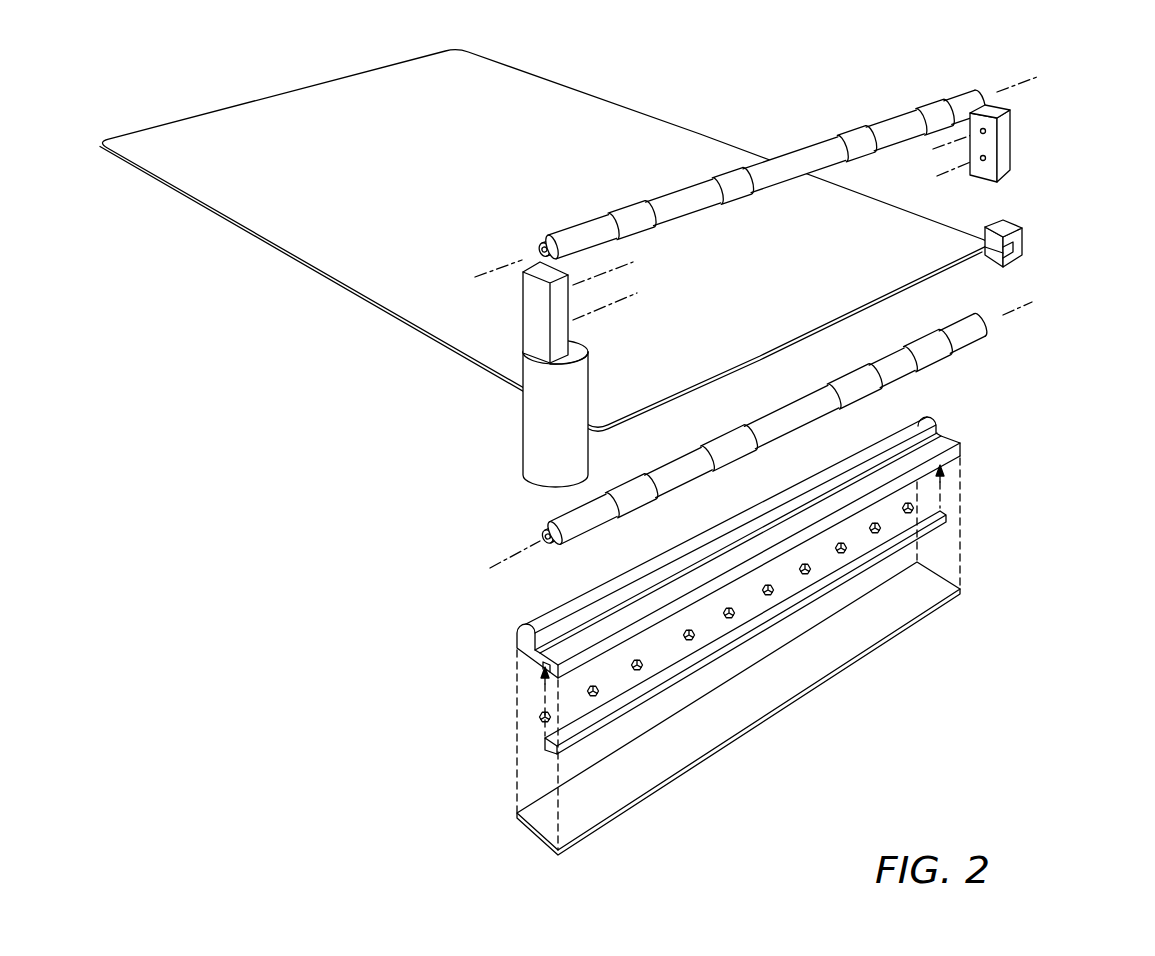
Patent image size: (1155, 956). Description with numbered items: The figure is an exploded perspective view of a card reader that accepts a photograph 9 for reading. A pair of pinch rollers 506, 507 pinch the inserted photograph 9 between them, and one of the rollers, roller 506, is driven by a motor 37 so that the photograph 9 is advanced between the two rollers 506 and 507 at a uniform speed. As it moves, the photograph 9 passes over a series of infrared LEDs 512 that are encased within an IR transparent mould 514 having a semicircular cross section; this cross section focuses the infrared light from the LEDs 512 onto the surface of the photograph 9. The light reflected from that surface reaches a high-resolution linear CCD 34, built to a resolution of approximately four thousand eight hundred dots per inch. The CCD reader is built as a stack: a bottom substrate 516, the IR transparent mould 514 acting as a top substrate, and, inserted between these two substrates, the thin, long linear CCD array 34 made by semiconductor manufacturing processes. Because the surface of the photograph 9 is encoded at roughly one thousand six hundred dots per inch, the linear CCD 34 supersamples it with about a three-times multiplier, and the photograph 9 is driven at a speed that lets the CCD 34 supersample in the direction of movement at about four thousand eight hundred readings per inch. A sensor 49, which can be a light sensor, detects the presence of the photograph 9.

The photograph 9 is at (683, 387).
The linear CCD 34 is at (946, 512).
The motor 37 is at (522, 433).
The sensor 49 is at (1022, 236).
The pinch roller 506 is at (983, 340).
The pinch roller 507 is at (952, 91).
The infrared LEDs 512 is at (540, 718).
The IR transparent mould 514 is at (517, 637).
The bottom substrate 516 is at (643, 800).